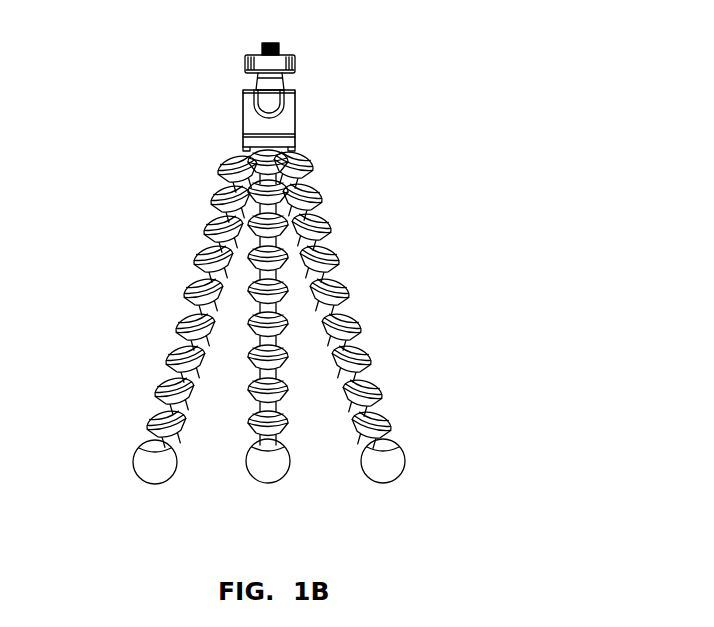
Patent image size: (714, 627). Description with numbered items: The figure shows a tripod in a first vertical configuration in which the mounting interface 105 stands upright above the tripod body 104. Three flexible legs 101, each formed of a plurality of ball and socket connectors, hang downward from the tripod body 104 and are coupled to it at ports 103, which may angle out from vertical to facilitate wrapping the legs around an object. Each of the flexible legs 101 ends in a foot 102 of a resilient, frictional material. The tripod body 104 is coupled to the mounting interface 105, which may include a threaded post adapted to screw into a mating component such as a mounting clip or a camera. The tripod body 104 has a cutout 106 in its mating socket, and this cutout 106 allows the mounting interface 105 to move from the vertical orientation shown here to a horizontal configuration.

The flexible legs 101 is at (180, 315).
The feet 102 is at (147, 475).
The ports 103 is at (230, 158).
The tripod body 104 is at (295, 115).
The mounting interface 105 is at (292, 55).
The cutout 106 is at (255, 102).